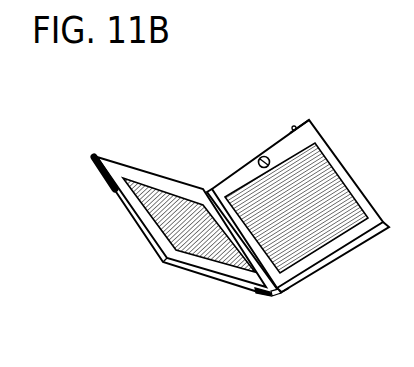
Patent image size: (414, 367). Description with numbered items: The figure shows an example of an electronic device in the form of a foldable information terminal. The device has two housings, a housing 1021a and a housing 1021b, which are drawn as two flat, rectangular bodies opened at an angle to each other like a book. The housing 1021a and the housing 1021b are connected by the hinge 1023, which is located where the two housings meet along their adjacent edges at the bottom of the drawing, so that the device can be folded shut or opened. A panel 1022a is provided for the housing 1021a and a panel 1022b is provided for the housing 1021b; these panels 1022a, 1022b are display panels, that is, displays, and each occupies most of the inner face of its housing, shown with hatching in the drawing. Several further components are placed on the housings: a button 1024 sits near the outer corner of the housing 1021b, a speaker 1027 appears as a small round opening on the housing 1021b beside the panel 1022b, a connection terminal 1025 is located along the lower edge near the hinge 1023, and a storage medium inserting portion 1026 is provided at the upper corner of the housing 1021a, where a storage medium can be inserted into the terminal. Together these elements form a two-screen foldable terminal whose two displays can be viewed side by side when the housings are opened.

The housing 1021a is at (179, 186).
The housing 1021b is at (298, 182).
The panel 1022a is at (142, 183).
The panel 1022b is at (270, 205).
The hinge 1023 is at (286, 291).
The button 1024 is at (296, 126).
The connection terminal 1025 is at (260, 297).
The storage medium inserting portion 1026 is at (66, 173).
The speaker 1027 is at (258, 156).